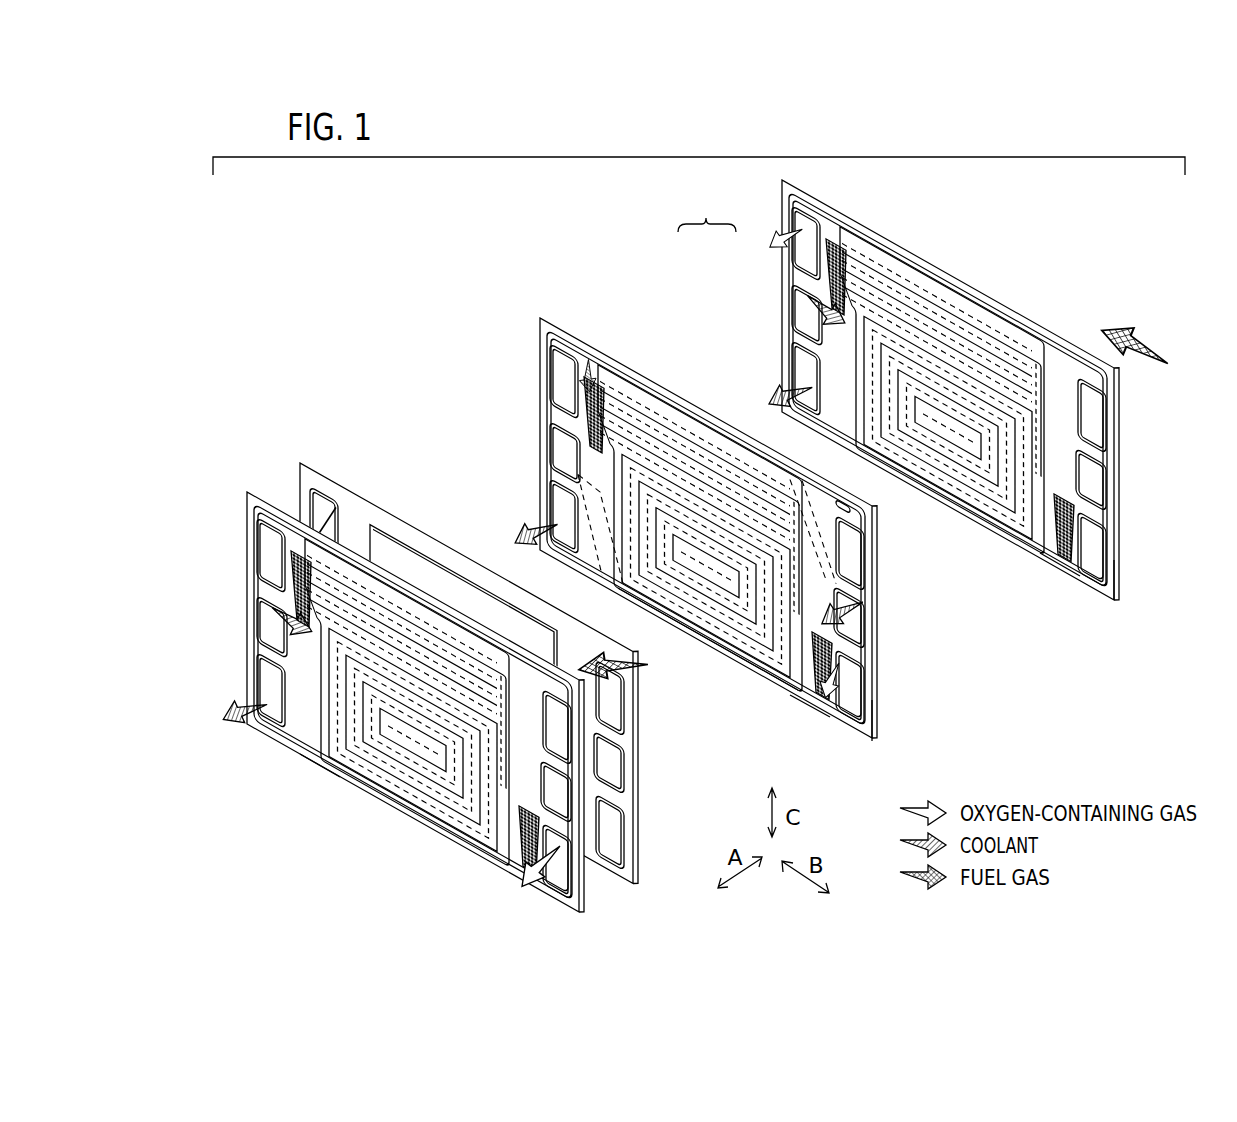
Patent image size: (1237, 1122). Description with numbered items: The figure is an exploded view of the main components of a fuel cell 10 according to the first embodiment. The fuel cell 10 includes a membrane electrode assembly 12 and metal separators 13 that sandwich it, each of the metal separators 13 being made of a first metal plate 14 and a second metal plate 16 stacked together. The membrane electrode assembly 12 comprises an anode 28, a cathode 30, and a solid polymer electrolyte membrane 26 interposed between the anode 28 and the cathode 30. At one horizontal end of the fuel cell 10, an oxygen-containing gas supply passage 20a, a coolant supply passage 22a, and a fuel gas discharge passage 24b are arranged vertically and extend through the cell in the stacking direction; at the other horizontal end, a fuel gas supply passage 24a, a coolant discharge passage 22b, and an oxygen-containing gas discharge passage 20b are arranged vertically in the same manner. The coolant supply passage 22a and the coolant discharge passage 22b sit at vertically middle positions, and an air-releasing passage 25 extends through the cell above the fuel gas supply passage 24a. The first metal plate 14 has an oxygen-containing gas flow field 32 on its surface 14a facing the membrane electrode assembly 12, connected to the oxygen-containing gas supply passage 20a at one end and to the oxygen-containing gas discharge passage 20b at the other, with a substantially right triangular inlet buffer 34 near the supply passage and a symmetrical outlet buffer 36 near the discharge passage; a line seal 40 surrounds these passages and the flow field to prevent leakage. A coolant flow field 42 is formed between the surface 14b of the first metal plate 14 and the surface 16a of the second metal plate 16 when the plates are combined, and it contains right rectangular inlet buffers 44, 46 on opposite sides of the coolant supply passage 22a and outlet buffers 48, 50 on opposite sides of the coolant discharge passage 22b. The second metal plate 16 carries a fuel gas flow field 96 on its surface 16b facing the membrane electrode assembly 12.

The fuel cell 10 is at (284, 351).
The membrane electrode assembly 12 is at (300, 449).
The metal separators 13 is at (707, 214).
The first metal plate 14 is at (577, 320).
The second metal plate 16 is at (250, 478).
The surface of first metal plate 14a is at (808, 700).
The surface of first metal plate 14b is at (868, 742).
The surface of second metal plate 16a is at (318, 755).
The surface of second metal plate 16b is at (1100, 598).
The oxygen-containing gas supply passage 20a is at (262, 548).
The oxygen-containing gas discharge passage 20b is at (625, 826).
The coolant supply passage 22a is at (265, 612).
The coolant discharge passage 22b is at (622, 770).
The fuel gas supply passage 24a is at (622, 708).
The fuel gas discharge passage 24b is at (262, 680).
The air-releasing passage 25 is at (605, 655).
The solid polymer electrolyte membrane 26 is at (603, 876).
The anode 28 is at (402, 563).
The cathode 30 is at (438, 582).
The oxygen-containing gas flow field 32 is at (684, 426).
The inlet buffer 34 is at (598, 368).
The outlet buffer 36 is at (793, 682).
The line seal 40 is at (748, 643).
The coolant flow field 42 is at (375, 771).
The inlet buffer 44 is at (597, 548).
The inlet buffer 46 is at (842, 258).
The outlet buffer 48 is at (1042, 525).
The outlet buffer 50 is at (815, 485).
The fuel gas flow field 96 is at (403, 790).